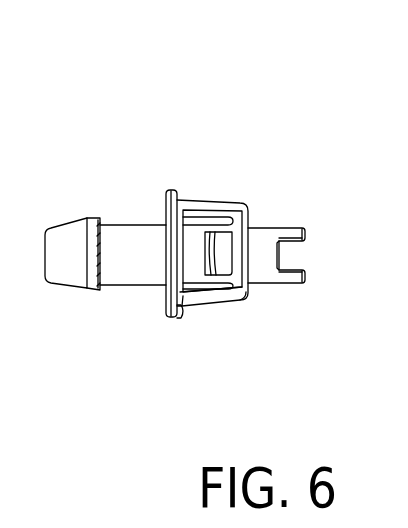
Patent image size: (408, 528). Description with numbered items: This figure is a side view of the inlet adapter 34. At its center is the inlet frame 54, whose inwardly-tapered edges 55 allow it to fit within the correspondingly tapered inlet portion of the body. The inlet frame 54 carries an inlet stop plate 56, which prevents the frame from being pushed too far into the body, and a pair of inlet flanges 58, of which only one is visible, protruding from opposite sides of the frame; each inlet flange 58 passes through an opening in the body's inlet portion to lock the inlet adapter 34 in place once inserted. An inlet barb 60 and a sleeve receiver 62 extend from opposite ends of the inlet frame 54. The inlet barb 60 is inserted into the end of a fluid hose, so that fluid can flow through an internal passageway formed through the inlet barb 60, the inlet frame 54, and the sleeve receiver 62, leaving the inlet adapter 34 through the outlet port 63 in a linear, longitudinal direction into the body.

The inlet adapter 34 is at (70, 155).
The inlet frame 54 is at (213, 300).
The inwardly-tapered edges 55 is at (197, 200).
The inlet stop plate 56 is at (172, 210).
The inlet flange 58 is at (220, 258).
The inlet barb 60 is at (112, 288).
The sleeve receiver 62 is at (287, 230).
The outlet port 63 is at (293, 255).